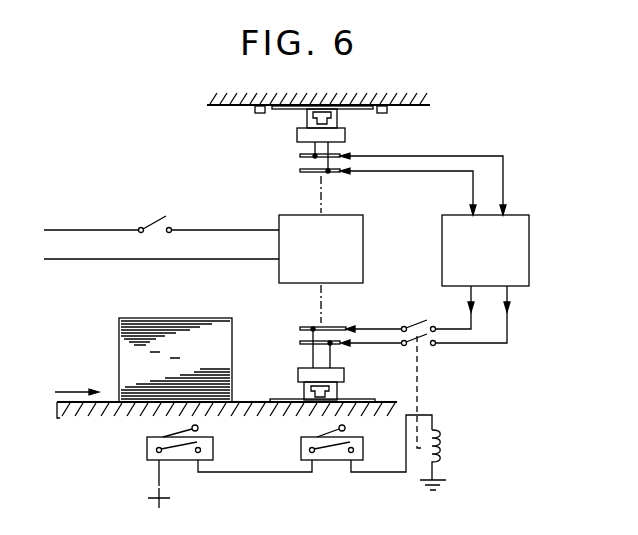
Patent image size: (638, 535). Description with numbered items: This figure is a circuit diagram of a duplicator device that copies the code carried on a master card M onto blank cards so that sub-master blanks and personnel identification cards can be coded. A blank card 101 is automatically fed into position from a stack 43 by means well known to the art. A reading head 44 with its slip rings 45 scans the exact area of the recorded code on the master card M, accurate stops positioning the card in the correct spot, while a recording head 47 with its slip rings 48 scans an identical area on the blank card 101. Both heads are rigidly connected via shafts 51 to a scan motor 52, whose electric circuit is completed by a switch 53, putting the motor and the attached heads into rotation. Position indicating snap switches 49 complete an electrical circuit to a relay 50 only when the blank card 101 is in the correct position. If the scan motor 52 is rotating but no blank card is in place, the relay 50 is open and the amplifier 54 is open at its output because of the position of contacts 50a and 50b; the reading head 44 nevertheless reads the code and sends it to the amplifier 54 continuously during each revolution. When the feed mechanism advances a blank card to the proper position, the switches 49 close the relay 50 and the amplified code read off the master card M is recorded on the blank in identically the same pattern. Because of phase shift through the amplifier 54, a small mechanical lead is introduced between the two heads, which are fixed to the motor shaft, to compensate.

The stack 43 is at (128, 370).
The reading head 44 is at (307, 114).
The slip rings 45 is at (300, 156).
The recording head 47 is at (298, 376).
The slip rings 48 is at (300, 343).
The position indicating snap switches 49 is at (194, 462).
The relay 50 is at (436, 456).
The contact 50a is at (391, 318).
The contact 50b is at (403, 352).
The shafts 51 is at (322, 312).
The scan motor 52 is at (352, 243).
The switch 53 is at (154, 216).
The amplifier 54 is at (530, 248).
The blank card 101 is at (355, 400).
The master card M is at (350, 107).